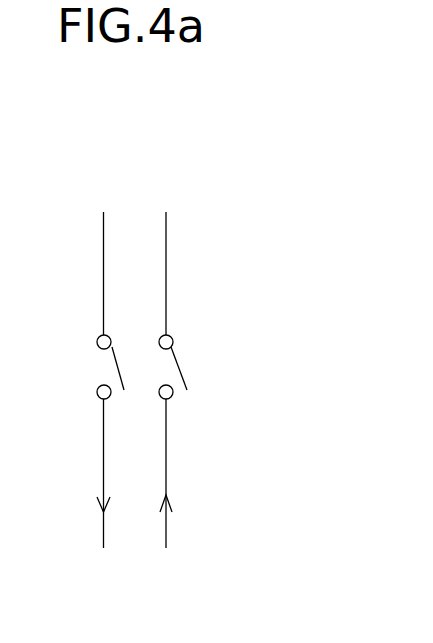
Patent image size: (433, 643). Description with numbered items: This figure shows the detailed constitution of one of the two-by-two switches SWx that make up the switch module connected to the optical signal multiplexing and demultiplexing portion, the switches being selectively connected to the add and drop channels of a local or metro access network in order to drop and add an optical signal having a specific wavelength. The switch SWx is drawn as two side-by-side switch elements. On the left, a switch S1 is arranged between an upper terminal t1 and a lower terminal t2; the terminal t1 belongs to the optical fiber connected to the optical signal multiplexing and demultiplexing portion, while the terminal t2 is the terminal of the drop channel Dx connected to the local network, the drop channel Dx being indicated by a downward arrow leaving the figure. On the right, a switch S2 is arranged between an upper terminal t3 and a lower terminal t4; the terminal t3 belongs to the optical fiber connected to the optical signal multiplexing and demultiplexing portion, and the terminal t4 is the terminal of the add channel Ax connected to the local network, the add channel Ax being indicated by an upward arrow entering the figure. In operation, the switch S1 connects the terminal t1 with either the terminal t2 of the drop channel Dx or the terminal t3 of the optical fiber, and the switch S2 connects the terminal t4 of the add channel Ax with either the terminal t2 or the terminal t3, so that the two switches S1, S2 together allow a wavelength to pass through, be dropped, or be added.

The terminal t1 is at (88, 331).
The terminal t2 is at (88, 407).
The terminal t3 is at (178, 331).
The terminal t4 is at (178, 407).
The switch S1 is at (117, 365).
The switch S2 is at (180, 367).
The 2×2 switch SWx is at (192, 393).
The drop channel Dx is at (102, 402).
The add channel Ax is at (166, 402).